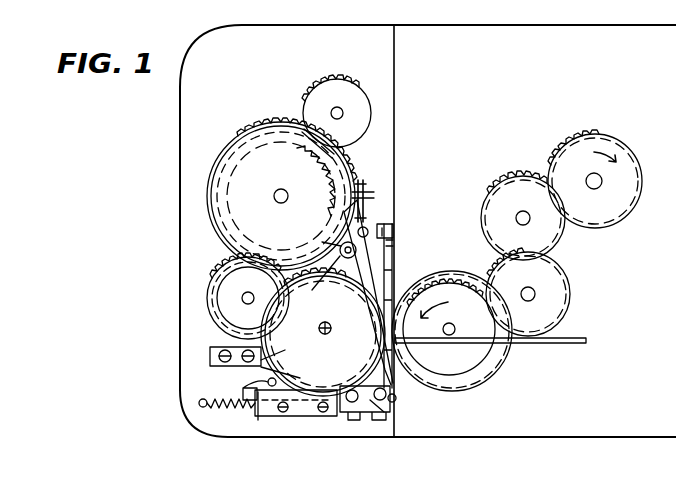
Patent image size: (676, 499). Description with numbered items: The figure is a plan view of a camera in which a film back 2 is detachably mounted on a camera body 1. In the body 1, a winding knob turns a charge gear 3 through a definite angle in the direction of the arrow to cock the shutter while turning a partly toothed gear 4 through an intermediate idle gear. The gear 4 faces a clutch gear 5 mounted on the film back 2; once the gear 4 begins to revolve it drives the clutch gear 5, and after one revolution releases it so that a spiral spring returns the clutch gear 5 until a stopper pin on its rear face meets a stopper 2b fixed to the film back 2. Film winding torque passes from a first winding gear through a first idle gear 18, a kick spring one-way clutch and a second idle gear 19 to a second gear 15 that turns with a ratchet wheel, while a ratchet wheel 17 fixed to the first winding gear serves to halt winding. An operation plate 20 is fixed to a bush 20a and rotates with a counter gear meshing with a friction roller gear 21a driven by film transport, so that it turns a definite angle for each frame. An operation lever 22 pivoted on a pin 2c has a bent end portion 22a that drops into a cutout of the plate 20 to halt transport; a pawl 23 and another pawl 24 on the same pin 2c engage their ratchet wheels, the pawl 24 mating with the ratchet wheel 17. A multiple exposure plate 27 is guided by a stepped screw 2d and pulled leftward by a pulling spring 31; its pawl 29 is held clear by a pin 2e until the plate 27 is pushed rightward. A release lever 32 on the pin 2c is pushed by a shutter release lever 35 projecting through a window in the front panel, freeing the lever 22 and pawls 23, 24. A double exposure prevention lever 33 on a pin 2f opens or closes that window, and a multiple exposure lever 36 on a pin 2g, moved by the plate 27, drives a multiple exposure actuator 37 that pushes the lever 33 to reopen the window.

The camera body 1 is at (617, 437).
The film back 2 is at (180, 113).
The stopper 2b is at (222, 351).
The pin 2c is at (340, 236).
The stepped screw 2d is at (283, 412).
The pin 2e is at (243, 388).
The pin 2f is at (392, 234).
The pin 2g is at (345, 414).
The charge gear 3 is at (637, 198).
The partly toothed gear 4 is at (503, 352).
The clutch gear 5 is at (372, 418).
The second gear 15 is at (268, 374).
The ratchet wheel 17 is at (236, 160).
The first idle gear 18 is at (230, 268).
The second idle gear 19 is at (216, 292).
The operation plate 20 is at (243, 136).
The bush 20a is at (303, 132).
The friction roller gear 21a is at (352, 73).
The operation lever 22 is at (370, 226).
The bent end portion 22a is at (366, 189).
The pawl 23 is at (331, 278).
The pawl 24 is at (362, 181).
The multiple exposure plate 27 is at (298, 414).
The pawl 29 is at (258, 392).
The pulling spring 31 is at (224, 410).
The release lever 32 is at (364, 297).
The double exposure prevention lever 33 is at (388, 266).
The shutter release lever 35 is at (554, 344).
The multiple exposure lever 36 is at (363, 416).
The multiple exposure actuator 37 is at (396, 393).